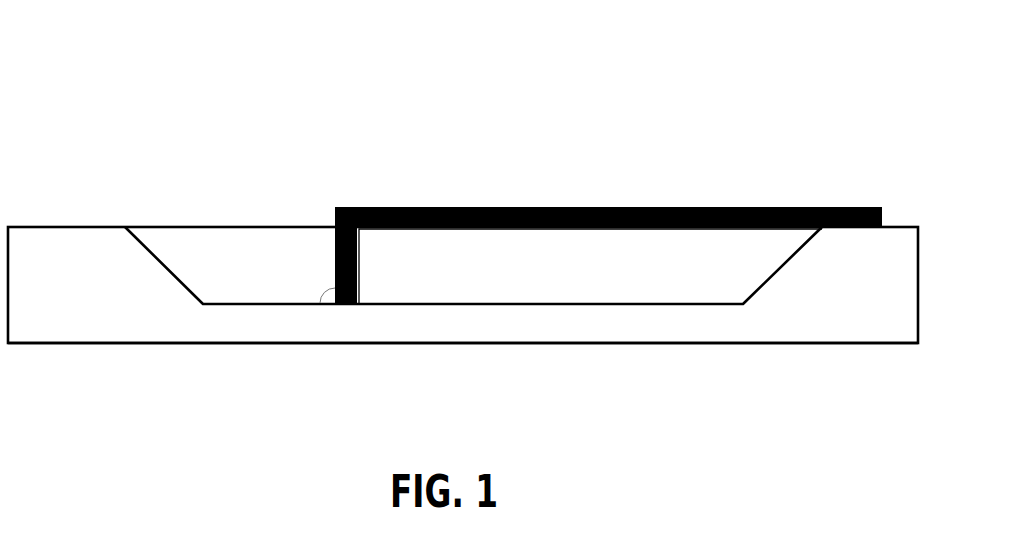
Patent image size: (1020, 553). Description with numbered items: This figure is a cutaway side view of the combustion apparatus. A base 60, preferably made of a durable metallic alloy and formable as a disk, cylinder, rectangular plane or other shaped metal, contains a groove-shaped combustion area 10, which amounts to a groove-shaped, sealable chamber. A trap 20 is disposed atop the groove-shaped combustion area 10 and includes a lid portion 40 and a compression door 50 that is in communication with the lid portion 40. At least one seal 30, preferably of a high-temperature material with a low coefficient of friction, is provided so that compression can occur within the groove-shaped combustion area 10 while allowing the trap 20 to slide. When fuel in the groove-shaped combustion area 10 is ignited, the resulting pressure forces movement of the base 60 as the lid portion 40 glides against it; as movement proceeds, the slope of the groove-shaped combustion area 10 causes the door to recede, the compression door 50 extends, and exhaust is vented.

The groove-shaped combustion area 10 is at (600, 282).
The trap 20 is at (482, 158).
The seal 30 is at (743, 232).
The lid portion 40 is at (568, 207).
The compression door 50 is at (335, 264).
The base 60 is at (228, 323).